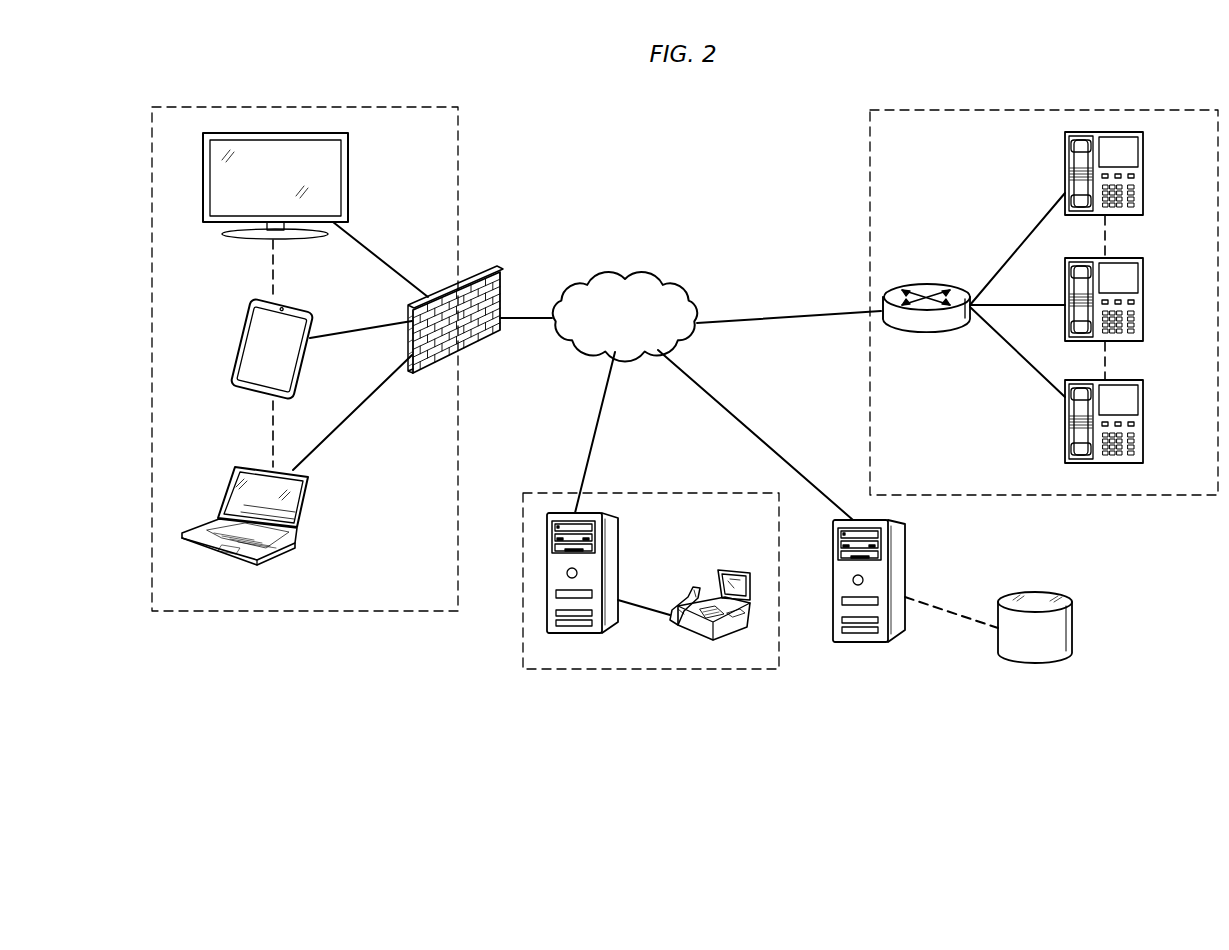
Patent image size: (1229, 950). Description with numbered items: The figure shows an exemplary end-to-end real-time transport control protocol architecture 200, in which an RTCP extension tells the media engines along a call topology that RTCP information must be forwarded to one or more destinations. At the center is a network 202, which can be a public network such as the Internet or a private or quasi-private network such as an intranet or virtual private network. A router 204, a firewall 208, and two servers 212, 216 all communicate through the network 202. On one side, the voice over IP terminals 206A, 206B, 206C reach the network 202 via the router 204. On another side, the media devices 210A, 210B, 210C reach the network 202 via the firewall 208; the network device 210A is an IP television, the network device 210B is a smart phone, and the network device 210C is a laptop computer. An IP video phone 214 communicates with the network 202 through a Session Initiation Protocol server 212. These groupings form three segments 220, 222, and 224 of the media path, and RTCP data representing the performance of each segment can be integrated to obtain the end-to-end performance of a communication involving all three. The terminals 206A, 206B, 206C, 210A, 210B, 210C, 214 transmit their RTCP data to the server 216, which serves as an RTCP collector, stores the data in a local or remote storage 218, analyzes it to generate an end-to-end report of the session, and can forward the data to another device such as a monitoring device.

The end-to-end real-time transport control protocol architecture 200 is at (418, 663).
The network 202 is at (627, 276).
The router 204 is at (928, 283).
The VoIP terminal 206A is at (1065, 148).
The VoIP terminal 206B is at (1145, 291).
The VoIP terminal 206C is at (1065, 422).
The firewall 208 is at (487, 270).
The media device (IP television) 210A is at (349, 175).
The media device (smart phone) 210B is at (243, 330).
The media device (laptop computer) 210C is at (300, 506).
The SIP server 212 is at (620, 534).
The IP video phone 214 is at (728, 567).
The server 216 is at (906, 552).
The storage 218 is at (1073, 623).
The segment 220 is at (293, 107).
The segment 222 is at (651, 493).
The segment 224 is at (946, 110).